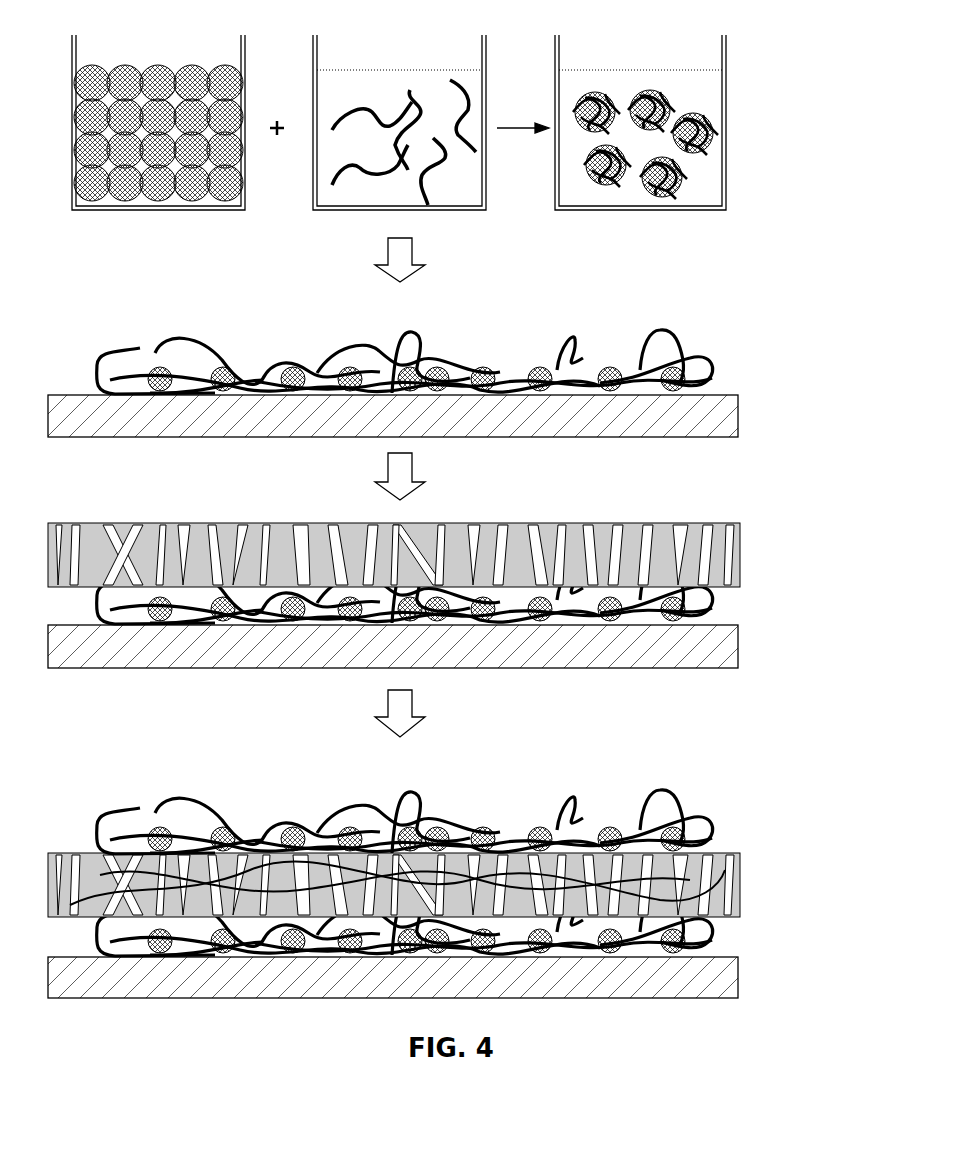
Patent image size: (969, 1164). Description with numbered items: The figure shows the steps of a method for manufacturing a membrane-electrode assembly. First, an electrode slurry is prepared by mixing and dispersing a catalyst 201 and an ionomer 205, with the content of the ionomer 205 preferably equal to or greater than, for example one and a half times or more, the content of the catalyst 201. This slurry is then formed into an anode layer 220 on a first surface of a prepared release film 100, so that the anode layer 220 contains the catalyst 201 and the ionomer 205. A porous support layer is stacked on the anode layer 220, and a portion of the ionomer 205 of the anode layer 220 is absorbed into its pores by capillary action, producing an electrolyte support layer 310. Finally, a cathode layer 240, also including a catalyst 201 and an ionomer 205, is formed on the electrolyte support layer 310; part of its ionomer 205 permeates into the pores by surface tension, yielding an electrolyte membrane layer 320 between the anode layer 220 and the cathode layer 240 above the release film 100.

The release film 100 is at (730, 415).
The catalyst 201 is at (185, 200).
The ionomer 205 is at (427, 192).
The anode layer 220 is at (803, 357).
The cathode layer 240 is at (770, 723).
The electrolyte support layer 310 is at (740, 548).
The electrolyte membrane layer 320 is at (740, 857).